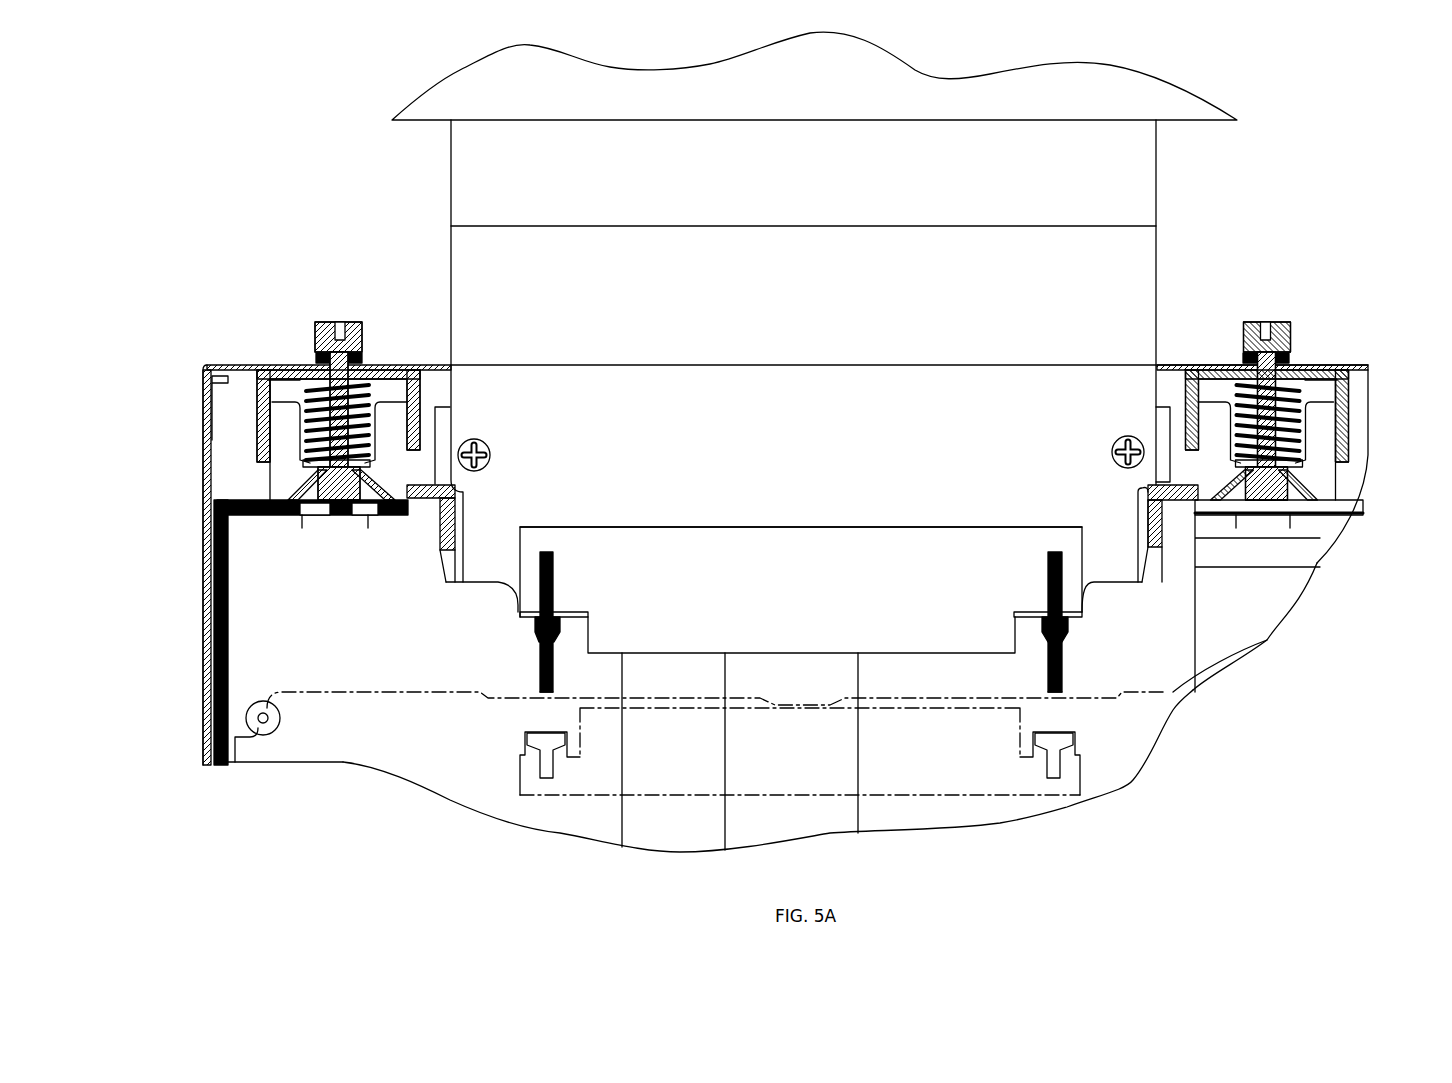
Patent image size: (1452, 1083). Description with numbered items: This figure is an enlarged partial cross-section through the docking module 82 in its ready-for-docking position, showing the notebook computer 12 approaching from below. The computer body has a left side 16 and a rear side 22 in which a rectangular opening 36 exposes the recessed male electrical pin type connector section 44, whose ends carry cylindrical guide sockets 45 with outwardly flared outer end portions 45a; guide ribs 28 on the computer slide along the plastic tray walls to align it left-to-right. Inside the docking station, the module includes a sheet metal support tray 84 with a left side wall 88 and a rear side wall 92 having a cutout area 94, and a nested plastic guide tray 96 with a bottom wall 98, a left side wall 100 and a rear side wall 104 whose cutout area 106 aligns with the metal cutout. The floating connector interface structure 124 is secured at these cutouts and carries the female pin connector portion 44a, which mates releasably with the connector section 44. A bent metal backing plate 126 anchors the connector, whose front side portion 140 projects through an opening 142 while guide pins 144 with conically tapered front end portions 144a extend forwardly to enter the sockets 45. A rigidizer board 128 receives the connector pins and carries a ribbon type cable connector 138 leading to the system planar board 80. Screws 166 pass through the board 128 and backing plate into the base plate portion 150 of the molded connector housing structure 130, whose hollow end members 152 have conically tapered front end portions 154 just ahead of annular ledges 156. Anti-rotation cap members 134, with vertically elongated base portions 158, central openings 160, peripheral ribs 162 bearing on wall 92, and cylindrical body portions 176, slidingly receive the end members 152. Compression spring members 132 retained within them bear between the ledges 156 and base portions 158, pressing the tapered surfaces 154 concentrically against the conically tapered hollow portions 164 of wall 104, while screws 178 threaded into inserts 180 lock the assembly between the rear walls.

The notebook computer 12 is at (1258, 650).
The left side 16 is at (262, 700).
The rear side 22 is at (312, 690).
The guide ribs 28 is at (218, 755).
The rectangular opening 36 is at (724, 696).
The male electrical pin type connector section 44 is at (930, 797).
The female pin connector portion 44a is at (935, 527).
The guide sockets 45 is at (530, 760).
The flared outer end portions 45a is at (530, 732).
The system planar board 80 is at (1190, 90).
The docking module 82 is at (1340, 252).
The sheet metal support tray 84 is at (203, 563).
The left side wall 88 is at (203, 597).
The rear side wall 92 is at (232, 365).
The cutout area 94 is at (410, 367).
The guide tray 96 is at (229, 606).
The bottom wall 98 is at (768, 771).
The left side wall 100 is at (229, 652).
The rear side wall 104 is at (232, 503).
The cutout area 106 is at (462, 497).
The floating connector interface structure 124 is at (1203, 238).
The backing plate 126 is at (1088, 615).
The rigidizer board 128 is at (672, 226).
The connector housing structure 130 is at (440, 530).
The compression spring members 132 is at (300, 366).
The anti-rotation cap members 134 is at (421, 400).
The ribbon type cable connector 138 is at (1157, 183).
The front side portion 140 is at (932, 653).
The opening 142 is at (590, 616).
The guide pins 144 is at (540, 663).
The conically tapered front end portions 144a is at (537, 692).
The base plate portion 150 is at (443, 433).
The end members 152 is at (282, 416).
The conically tapered front end portions 154 is at (302, 528).
The annular ledges 156 is at (368, 528).
The base portions 158 is at (390, 367).
The central openings 160 is at (322, 375).
The peripheral ribs 162 is at (268, 368).
The conically tapered hollow portions 164 is at (290, 497).
The screws 166 is at (491, 456).
The cylindrical body portions 176 is at (266, 398).
The screws 178 is at (348, 322).
The threaded inserts 180 is at (811, 501).